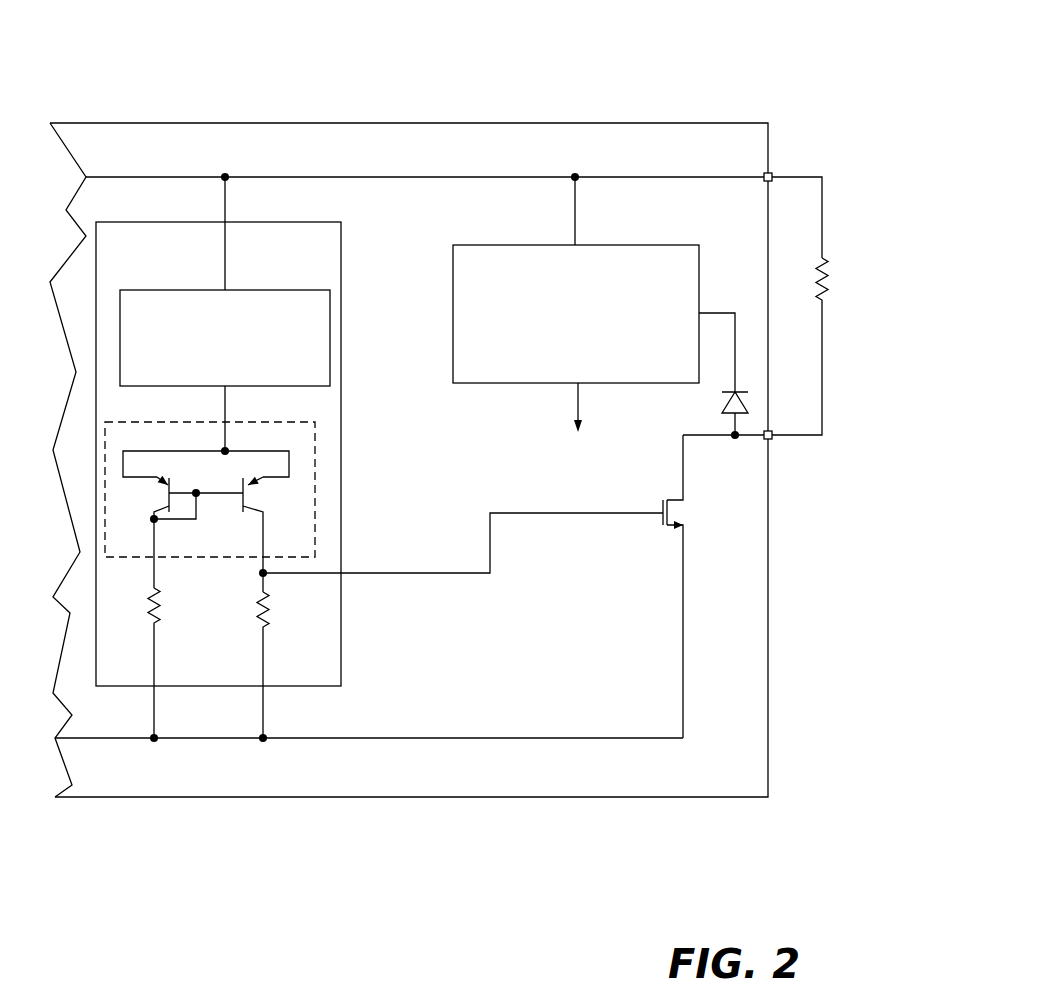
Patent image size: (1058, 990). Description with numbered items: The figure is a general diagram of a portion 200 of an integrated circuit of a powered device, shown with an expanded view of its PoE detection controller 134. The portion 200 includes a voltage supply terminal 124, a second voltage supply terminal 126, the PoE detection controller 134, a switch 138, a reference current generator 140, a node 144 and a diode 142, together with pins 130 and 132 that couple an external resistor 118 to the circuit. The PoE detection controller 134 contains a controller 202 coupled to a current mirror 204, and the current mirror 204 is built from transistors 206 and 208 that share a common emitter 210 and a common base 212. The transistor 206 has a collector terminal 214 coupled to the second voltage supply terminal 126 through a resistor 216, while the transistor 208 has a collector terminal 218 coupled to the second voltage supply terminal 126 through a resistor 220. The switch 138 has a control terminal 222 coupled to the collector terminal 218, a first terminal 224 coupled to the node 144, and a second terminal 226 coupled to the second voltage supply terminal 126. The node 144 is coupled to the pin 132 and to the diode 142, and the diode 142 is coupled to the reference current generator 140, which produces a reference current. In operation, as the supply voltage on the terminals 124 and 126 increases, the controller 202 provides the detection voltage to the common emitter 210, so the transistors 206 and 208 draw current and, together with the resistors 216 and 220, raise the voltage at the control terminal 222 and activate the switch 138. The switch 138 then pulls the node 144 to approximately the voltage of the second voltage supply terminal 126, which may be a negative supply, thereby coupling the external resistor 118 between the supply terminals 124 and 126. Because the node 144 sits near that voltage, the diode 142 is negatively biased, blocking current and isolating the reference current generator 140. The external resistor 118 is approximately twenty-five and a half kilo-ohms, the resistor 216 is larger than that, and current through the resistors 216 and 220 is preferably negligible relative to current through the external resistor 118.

The portion of an integrated circuit 200 is at (781, 45).
The voltage supply terminal 124 is at (330, 176).
The second voltage supply terminal 126 is at (333, 740).
The pin 130 is at (774, 174).
The pin 132 is at (772, 440).
The external resistor 118 is at (830, 290).
The PoE detection controller 134 is at (341, 245).
The controller 202 is at (250, 290).
The current mirror 204 is at (316, 430).
The common emitter 210 is at (170, 451).
The transistor 206 is at (146, 495).
The transistor 208 is at (272, 493).
The common base 212 is at (208, 494).
The collector terminal 214 is at (152, 572).
The resistor 216 is at (157, 613).
The collector terminal 218 is at (260, 562).
The resistor 220 is at (273, 605).
The reference current generator 140 is at (628, 243).
The diode 142 is at (722, 410).
The node 144 is at (739, 438).
The first terminal 224 is at (683, 470).
The control terminal 222 is at (597, 515).
The second terminal 226 is at (683, 547).
The switch 138 is at (694, 512).